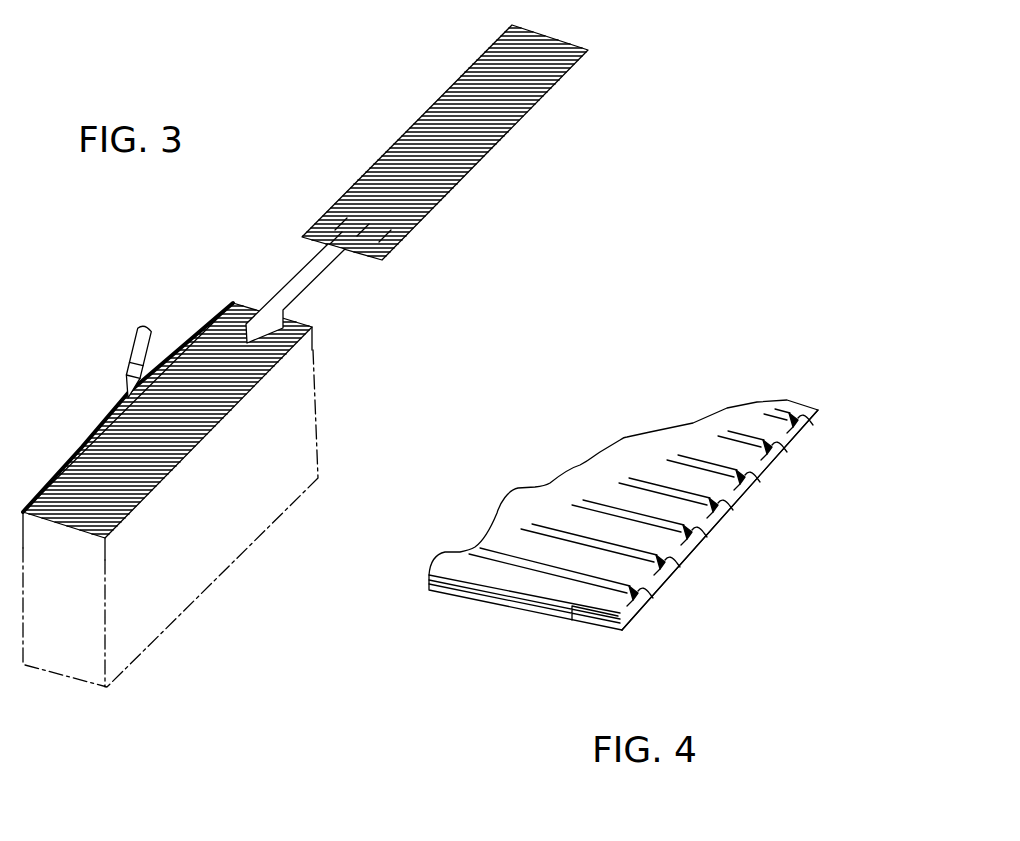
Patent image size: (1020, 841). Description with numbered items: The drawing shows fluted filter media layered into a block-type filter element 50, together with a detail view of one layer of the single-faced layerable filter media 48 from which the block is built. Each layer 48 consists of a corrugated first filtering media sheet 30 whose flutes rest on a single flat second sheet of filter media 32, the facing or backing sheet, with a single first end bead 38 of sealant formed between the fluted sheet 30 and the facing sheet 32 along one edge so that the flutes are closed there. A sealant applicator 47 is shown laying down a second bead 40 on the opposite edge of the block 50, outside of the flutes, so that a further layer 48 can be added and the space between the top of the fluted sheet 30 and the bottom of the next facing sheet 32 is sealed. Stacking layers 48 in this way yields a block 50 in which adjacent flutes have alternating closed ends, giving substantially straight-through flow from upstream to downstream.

In FIG. 4, the first filtering media sheet 30 is at (605, 488).
In FIG. 4, the second flat sheet of filter media 32 is at (770, 467).
In FIG. 4, the first end bead 38 is at (687, 530).
In FIG. 3, the second bead 40 is at (88, 440).
In FIG. 3, the sealant applicator 47 is at (133, 352).
In FIG. 3, the single-faced layerable filter media 48 is at (457, 142).
In FIG. 4, the single-faced layerable filter media 48 is at (572, 627).
In FIG. 3, the block-type filter element 50 is at (70, 612).